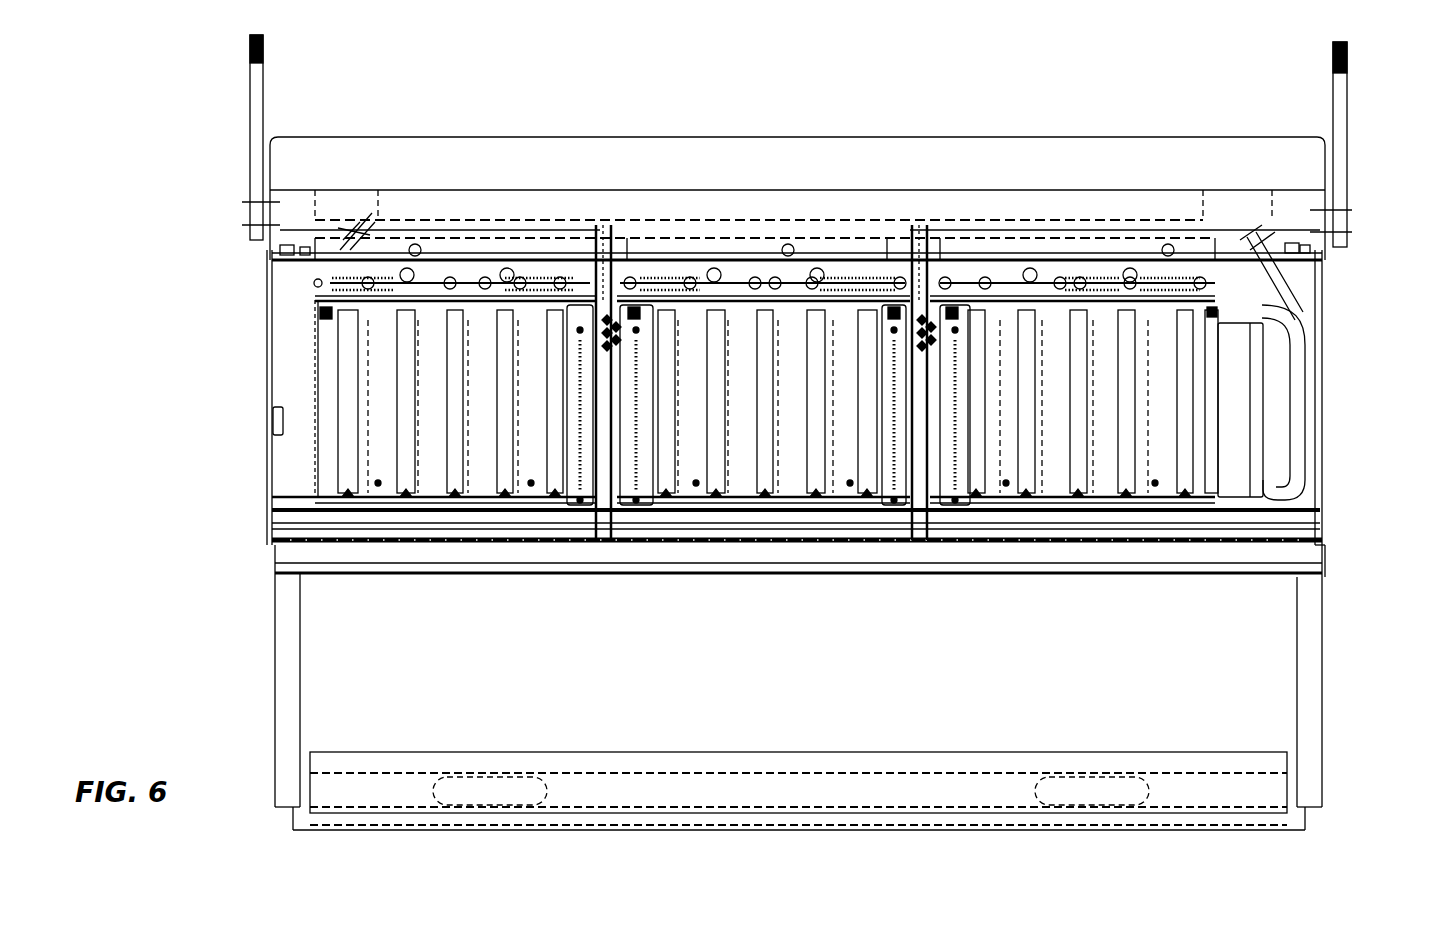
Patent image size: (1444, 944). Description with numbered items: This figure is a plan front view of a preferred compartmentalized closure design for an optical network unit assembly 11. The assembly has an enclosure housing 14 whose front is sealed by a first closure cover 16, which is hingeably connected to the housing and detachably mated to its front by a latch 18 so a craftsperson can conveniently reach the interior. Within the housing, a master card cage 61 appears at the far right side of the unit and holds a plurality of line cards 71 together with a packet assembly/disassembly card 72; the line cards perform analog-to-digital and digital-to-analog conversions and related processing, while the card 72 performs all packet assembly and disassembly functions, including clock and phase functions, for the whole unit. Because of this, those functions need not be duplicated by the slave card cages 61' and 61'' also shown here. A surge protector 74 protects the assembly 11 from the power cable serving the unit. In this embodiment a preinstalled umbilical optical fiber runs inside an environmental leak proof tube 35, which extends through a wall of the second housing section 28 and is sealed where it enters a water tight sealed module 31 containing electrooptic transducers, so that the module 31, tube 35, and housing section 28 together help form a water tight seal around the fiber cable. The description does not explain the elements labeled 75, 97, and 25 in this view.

The optical network unit assembly 11 is at (881, 62).
The second housing section 28 is at (1190, 150).
The module divider post 75 is at (587, 263).
The surge protector 74 is at (970, 263).
The environmental leak proof tube 35 is at (1295, 293).
The water tight sealed module 31 is at (1240, 398).
The enclosure housing 14 is at (1322, 455).
The latch 97 is at (268, 422).
The battery cell 25 is at (398, 478).
The slave card cage 61'' is at (470, 467).
The slave card cage 61' is at (683, 467).
The master card cage 61 is at (956, 467).
The line cards 71 is at (1062, 488).
The packet assembly/disassembly card 72 is at (1181, 488).
The first closure cover 16 is at (1287, 647).
The latch 18 is at (472, 805).